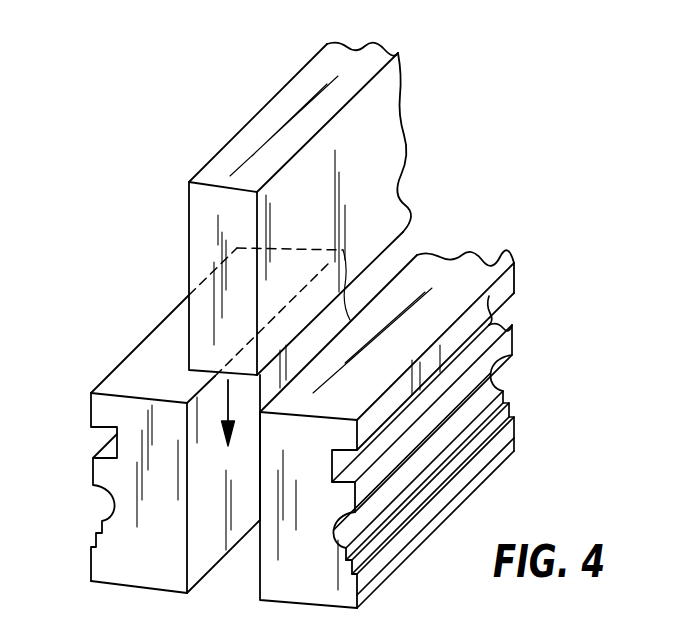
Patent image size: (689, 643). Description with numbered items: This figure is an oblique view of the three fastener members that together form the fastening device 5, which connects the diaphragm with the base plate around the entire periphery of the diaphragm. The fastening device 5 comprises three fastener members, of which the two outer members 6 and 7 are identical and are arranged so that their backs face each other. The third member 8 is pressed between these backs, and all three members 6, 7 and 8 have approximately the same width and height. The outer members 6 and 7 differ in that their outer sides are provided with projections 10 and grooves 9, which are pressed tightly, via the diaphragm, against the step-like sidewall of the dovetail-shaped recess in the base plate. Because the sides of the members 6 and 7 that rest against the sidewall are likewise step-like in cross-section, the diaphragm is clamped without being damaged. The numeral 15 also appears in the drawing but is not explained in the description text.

The door frame assembly 5 is at (118, 210).
The jamb member 6 is at (140, 553).
The top strip 7 is at (453, 285).
The filler strip 8 is at (240, 170).
The molded profile 9 is at (93, 548).
The upper jamb portion 10 is at (113, 390).
The laminated molding layers 15 is at (517, 422).